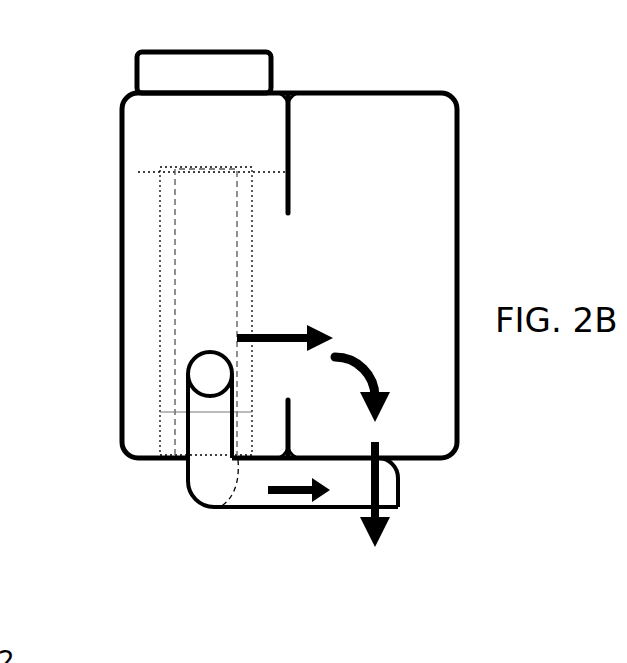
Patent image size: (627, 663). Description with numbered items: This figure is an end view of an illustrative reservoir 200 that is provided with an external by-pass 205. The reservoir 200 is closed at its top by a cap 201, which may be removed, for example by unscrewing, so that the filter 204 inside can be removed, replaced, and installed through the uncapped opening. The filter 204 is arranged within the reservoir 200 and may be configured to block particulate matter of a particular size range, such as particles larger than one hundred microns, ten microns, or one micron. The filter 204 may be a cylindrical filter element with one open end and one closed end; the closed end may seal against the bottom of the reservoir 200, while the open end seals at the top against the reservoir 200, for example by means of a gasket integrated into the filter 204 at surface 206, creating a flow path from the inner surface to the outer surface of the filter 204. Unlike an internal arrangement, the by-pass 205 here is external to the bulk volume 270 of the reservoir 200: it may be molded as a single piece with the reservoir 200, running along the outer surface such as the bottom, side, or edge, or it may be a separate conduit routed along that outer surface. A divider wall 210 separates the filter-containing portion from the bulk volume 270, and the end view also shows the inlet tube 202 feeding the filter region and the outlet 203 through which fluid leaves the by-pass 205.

The reservoir 200 is at (553, 167).
The cap 201 is at (271, 74).
The inlet tube 202 is at (208, 380).
The outlet 203 is at (400, 508).
The filter 204 is at (162, 294).
The by-pass 205 is at (253, 508).
The surface 206 is at (140, 172).
The divider wall 210 is at (290, 172).
The bulk volume 270 is at (432, 194).